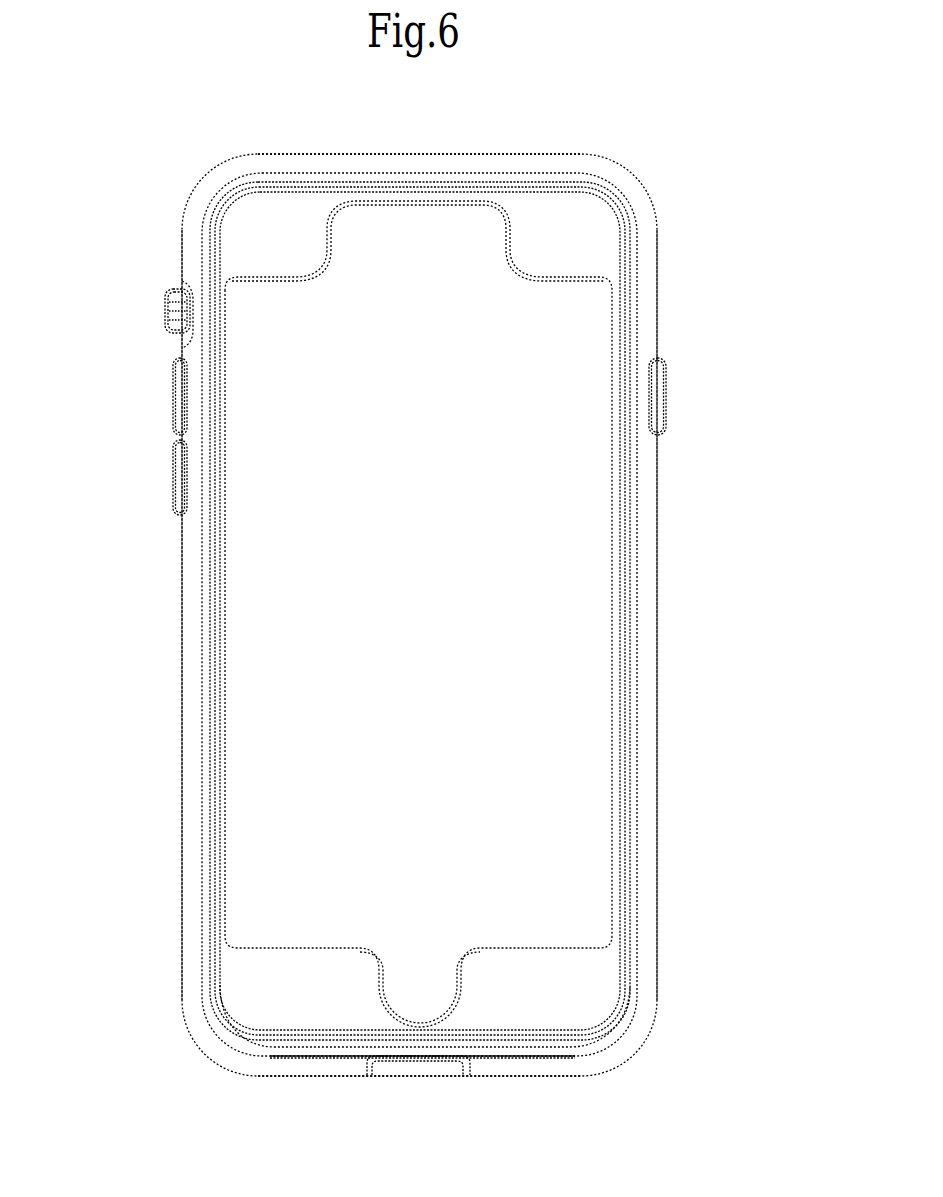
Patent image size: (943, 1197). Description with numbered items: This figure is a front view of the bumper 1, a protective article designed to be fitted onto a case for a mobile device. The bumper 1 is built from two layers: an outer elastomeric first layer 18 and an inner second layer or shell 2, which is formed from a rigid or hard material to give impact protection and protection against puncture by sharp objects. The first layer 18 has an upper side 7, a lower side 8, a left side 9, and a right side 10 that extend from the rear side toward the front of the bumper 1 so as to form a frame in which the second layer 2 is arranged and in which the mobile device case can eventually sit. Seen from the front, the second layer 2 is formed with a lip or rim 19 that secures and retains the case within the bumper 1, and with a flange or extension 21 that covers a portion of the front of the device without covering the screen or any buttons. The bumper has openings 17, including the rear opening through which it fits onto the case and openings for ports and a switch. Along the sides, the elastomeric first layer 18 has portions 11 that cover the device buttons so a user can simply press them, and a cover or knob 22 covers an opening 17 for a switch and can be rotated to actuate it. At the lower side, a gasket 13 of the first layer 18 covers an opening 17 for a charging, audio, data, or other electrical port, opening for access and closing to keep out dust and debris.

The bumper 1 is at (133, 702).
The second layer or shell 2 is at (548, 215).
The upper side 7 is at (513, 155).
The lower side 8 is at (503, 1070).
The left side 9 is at (178, 843).
The right side 10 is at (657, 837).
The portions 11 is at (170, 475).
The gasket 13 is at (407, 1065).
The opening 17 is at (404, 492).
The first layer 18 is at (650, 530).
The lip or rim 19 is at (213, 772).
The flange or extension 21 is at (262, 237).
The cover or knob 22 is at (163, 297).